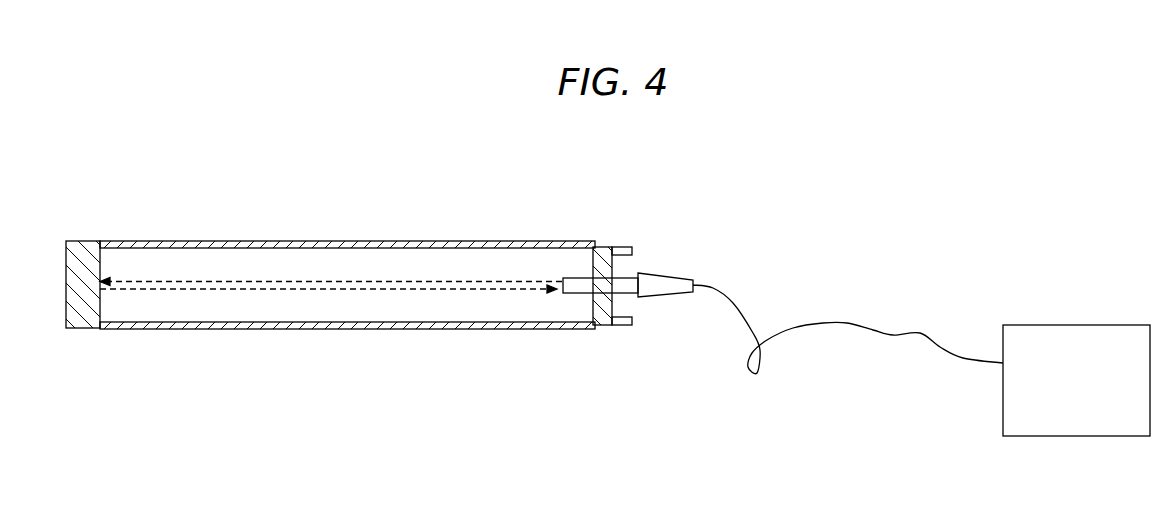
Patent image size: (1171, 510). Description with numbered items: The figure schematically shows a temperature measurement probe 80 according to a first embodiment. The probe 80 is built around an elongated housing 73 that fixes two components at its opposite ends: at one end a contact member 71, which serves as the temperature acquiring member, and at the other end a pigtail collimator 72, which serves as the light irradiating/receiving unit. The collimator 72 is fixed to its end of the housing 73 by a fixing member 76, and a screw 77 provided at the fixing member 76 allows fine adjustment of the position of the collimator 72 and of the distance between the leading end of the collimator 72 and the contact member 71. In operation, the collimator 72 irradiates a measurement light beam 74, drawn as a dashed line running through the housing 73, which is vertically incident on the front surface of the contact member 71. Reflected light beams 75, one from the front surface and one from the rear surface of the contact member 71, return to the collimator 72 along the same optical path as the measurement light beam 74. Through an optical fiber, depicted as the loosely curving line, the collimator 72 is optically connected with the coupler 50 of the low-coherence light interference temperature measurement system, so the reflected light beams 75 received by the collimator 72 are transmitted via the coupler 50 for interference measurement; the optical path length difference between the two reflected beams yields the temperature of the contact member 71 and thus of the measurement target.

The coupler 50 is at (1080, 325).
The contact member 71 is at (82, 328).
The pigtail collimator 72 is at (661, 291).
The housing 73 is at (262, 240).
The measurement light beam 74 is at (328, 280).
The reflected light beams 75 is at (348, 290).
The fixing member 76 is at (602, 326).
The screw 77 is at (628, 247).
The temperature measurement probe 80 is at (477, 203).